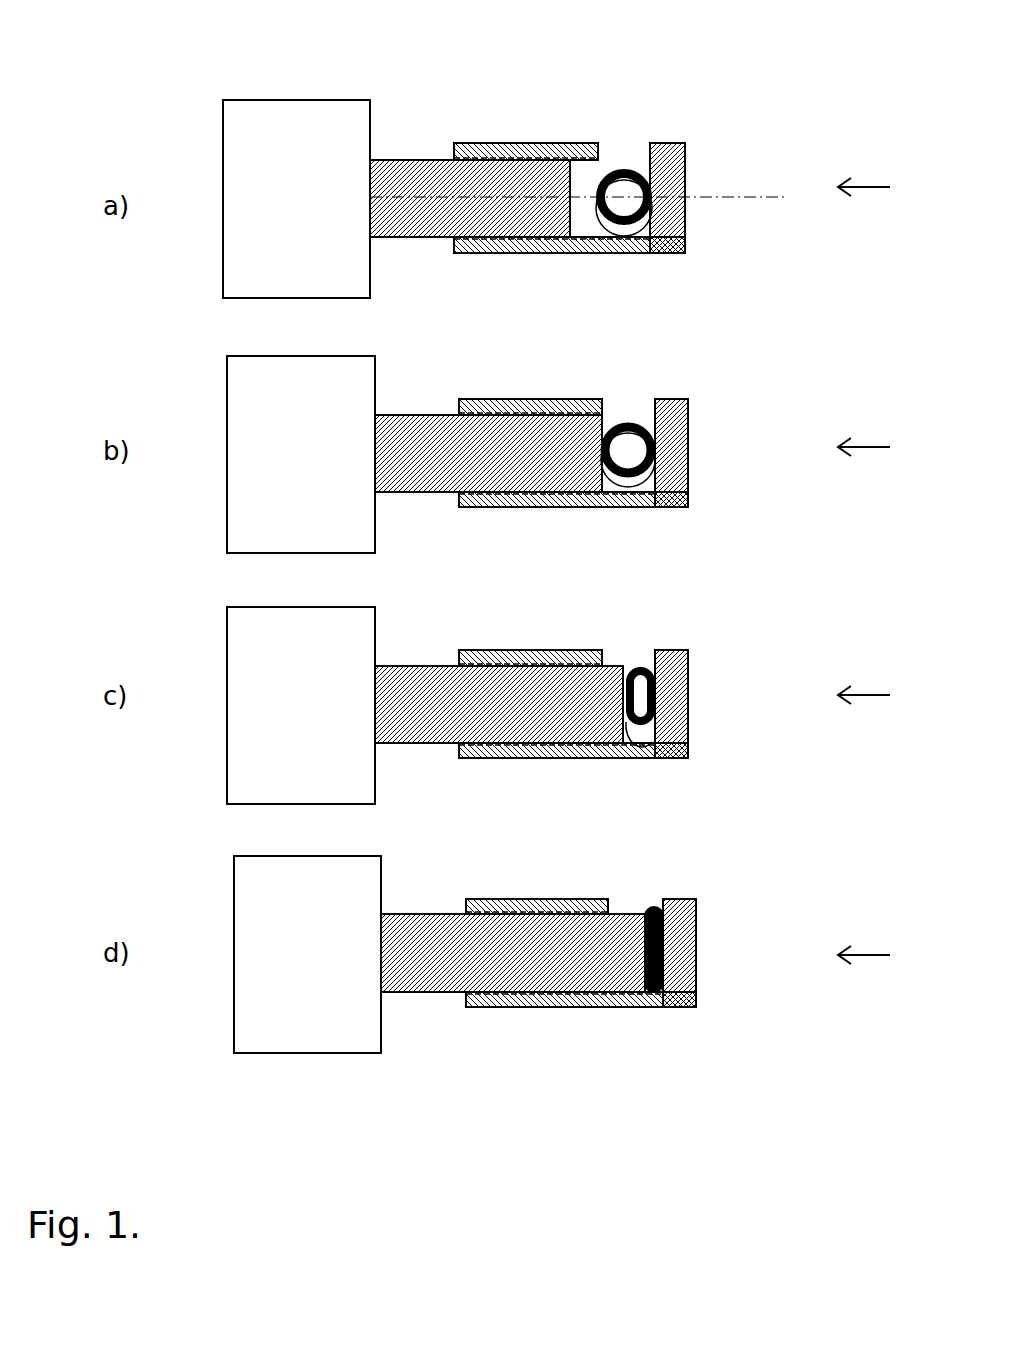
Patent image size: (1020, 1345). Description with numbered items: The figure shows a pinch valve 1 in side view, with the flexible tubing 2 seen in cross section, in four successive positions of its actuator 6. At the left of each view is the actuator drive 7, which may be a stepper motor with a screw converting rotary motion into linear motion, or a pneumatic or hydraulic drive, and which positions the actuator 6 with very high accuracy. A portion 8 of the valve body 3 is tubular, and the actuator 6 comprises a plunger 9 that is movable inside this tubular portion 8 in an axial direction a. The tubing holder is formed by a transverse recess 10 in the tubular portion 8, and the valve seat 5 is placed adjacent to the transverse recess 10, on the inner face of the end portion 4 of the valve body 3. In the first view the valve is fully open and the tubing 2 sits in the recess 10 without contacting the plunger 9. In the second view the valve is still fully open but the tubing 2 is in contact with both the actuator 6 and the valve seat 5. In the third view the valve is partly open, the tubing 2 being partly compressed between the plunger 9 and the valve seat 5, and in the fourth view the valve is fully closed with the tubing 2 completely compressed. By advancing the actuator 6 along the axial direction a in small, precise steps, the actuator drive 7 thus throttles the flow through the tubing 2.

The pinch valve 1 is at (879, 572).
The flexible tubing 2 is at (625, 170).
The housing / sleeve 3 is at (606, 508).
The end wall / stop 4 is at (645, 158).
The sealing surface of end wall 5 is at (653, 175).
The actuator 6 is at (455, 185).
The actuator drive 7 is at (305, 167).
The tubular portion of the valve body 8 is at (541, 145).
The plunger 9 is at (547, 187).
The transverse recess 10 is at (600, 158).
The axial direction a is at (750, 197).